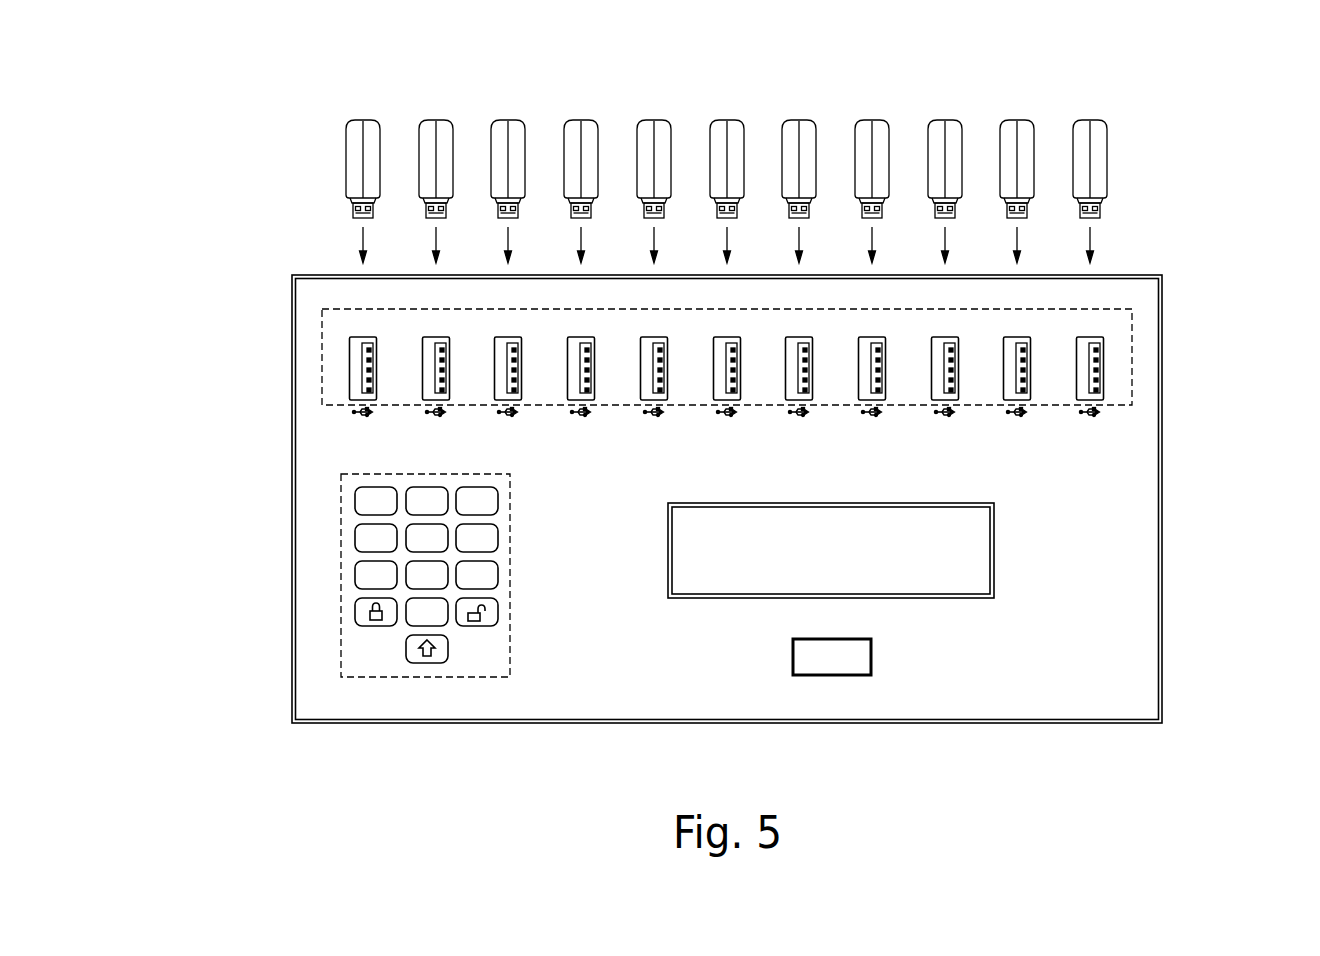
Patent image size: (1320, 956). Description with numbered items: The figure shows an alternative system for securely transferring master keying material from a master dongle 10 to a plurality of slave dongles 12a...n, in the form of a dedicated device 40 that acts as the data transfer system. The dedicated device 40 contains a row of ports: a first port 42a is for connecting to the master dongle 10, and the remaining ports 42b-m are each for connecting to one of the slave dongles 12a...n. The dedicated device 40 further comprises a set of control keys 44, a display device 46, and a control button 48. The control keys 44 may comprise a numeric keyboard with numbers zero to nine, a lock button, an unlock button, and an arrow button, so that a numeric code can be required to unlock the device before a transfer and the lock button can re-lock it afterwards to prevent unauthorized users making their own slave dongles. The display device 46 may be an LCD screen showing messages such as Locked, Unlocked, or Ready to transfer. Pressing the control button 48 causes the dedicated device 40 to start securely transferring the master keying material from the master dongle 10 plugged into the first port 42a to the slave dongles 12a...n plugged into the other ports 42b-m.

The master dongle 10 is at (318, 60).
The slave dongles 12a...n is at (508, 110).
The dedicated device 40 is at (1160, 500).
The first port 42a is at (339, 370).
The remaining ports 42b-m is at (581, 430).
The control keys 44 is at (340, 576).
The display device 46 is at (1018, 758).
The control button 48 is at (875, 758).